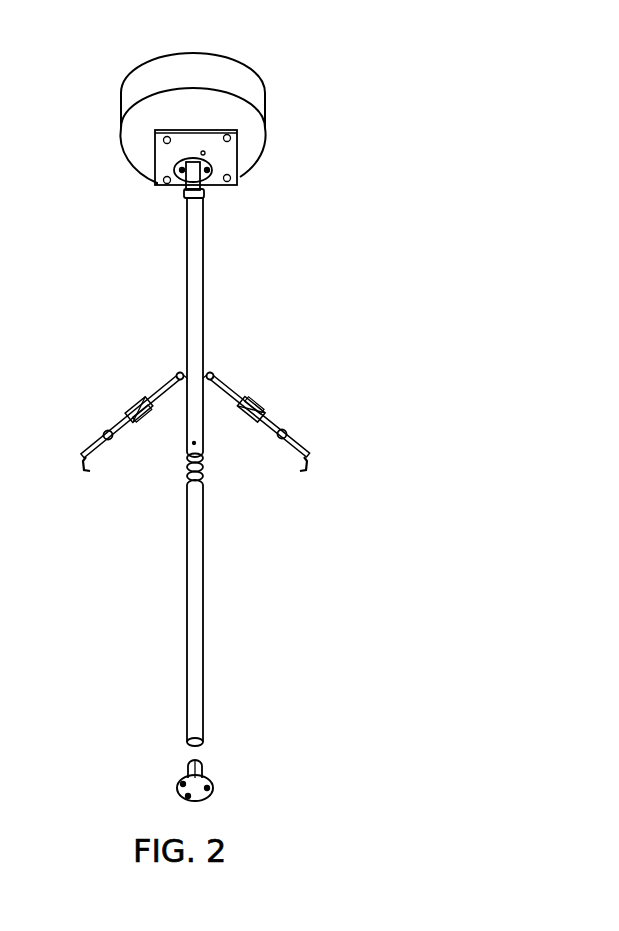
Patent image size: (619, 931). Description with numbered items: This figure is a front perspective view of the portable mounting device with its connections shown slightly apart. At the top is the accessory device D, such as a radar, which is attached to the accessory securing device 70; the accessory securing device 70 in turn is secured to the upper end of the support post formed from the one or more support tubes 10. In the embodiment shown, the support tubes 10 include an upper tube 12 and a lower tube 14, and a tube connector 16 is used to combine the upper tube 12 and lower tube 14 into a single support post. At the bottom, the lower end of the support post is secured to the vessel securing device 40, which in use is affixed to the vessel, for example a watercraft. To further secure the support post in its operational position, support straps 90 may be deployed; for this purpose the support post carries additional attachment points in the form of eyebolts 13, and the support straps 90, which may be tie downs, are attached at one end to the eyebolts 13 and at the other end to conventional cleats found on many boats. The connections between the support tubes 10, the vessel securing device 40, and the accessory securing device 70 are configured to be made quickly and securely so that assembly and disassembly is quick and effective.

The accessory device D is at (228, 76).
The accessory securing device 70 is at (239, 133).
The support tubes 10 is at (377, 454).
The upper tube 12 is at (197, 288).
The eyebolts 13 is at (218, 372).
The support straps 90 is at (290, 432).
The tube connector 16 is at (212, 486).
The lower tube 14 is at (193, 640).
The vessel securing device 40 is at (217, 782).